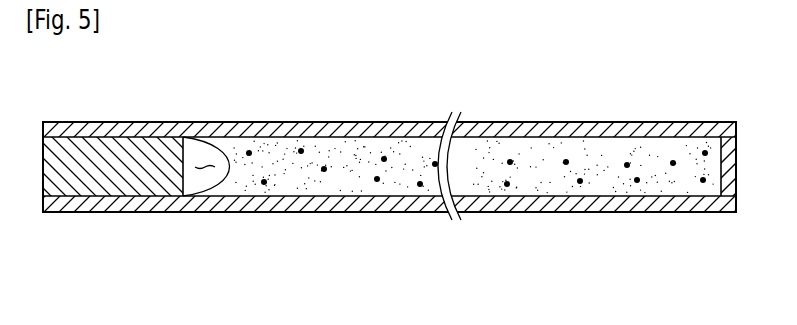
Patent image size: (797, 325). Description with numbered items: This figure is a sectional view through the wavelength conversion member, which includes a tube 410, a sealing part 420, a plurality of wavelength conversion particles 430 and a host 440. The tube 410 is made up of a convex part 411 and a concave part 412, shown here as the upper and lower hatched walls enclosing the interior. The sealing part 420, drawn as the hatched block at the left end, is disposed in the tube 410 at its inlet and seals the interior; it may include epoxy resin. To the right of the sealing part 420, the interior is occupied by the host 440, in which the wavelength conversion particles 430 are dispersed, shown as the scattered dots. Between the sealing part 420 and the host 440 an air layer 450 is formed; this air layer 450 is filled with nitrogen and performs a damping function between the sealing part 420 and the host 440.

The tube 410 is at (625, 272).
The convex part 411 is at (533, 203).
The concave part 412 is at (610, 130).
The sealing part 420 is at (115, 177).
The wavelength conversion particles 430 is at (324, 172).
The host 440 is at (248, 177).
The air layer 450 is at (207, 165).